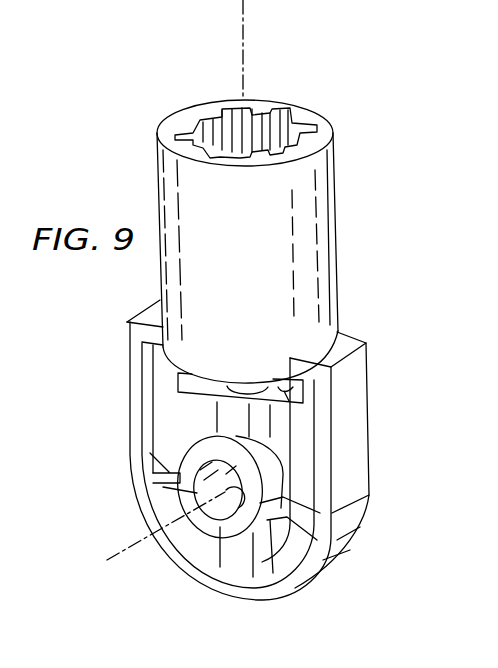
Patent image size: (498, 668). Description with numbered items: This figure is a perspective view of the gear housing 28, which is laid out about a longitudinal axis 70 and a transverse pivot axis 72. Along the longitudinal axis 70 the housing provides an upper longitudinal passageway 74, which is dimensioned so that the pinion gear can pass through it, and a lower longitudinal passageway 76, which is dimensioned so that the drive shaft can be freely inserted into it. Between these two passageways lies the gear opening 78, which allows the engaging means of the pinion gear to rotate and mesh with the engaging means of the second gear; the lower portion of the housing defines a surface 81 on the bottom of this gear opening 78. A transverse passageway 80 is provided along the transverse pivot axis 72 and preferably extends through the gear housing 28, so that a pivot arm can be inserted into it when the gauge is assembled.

The longitudinal axis 70 is at (240, 28).
The upper longitudinal passageway 74 is at (258, 117).
The gear housing 28 is at (336, 202).
The lower longitudinal passageway 76 is at (246, 388).
The surface 81 is at (285, 386).
The gear opening 78 is at (299, 396).
The transverse pivot axis 72 is at (118, 546).
The transverse passageway 80 is at (216, 508).